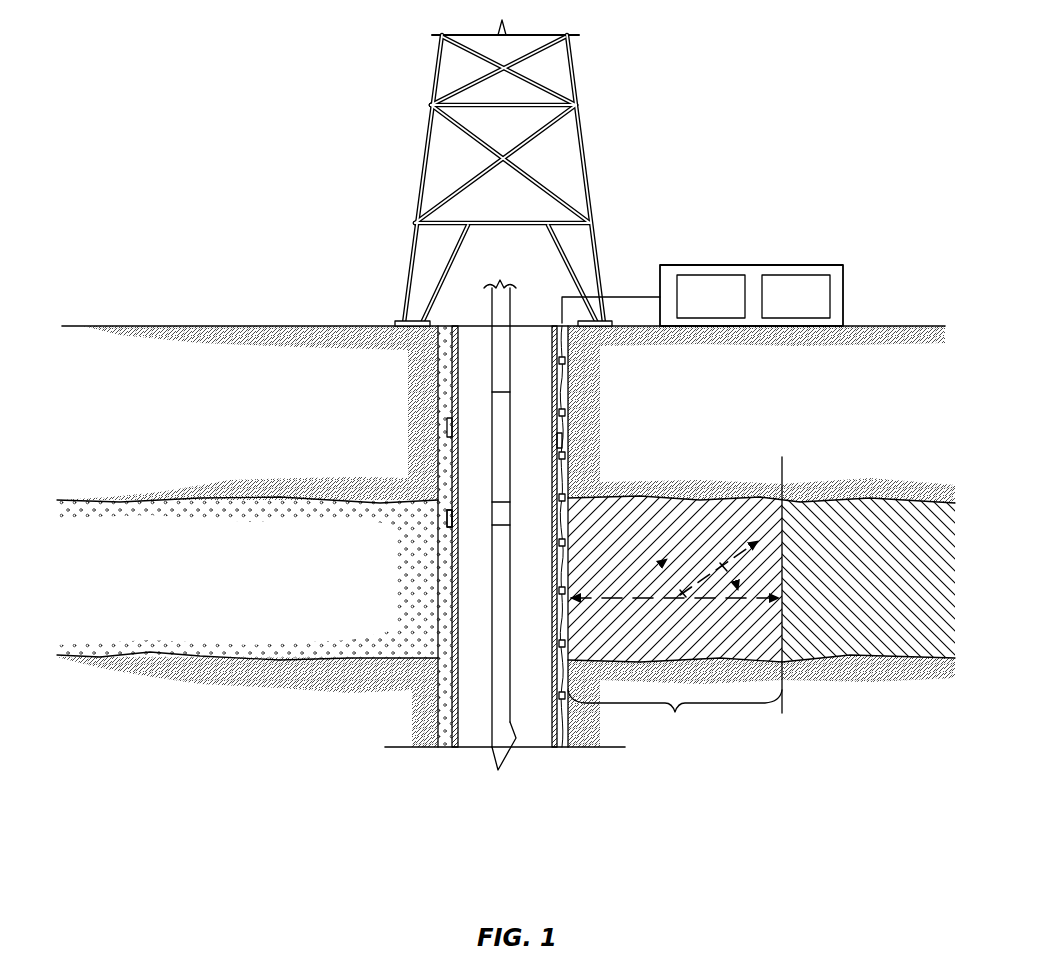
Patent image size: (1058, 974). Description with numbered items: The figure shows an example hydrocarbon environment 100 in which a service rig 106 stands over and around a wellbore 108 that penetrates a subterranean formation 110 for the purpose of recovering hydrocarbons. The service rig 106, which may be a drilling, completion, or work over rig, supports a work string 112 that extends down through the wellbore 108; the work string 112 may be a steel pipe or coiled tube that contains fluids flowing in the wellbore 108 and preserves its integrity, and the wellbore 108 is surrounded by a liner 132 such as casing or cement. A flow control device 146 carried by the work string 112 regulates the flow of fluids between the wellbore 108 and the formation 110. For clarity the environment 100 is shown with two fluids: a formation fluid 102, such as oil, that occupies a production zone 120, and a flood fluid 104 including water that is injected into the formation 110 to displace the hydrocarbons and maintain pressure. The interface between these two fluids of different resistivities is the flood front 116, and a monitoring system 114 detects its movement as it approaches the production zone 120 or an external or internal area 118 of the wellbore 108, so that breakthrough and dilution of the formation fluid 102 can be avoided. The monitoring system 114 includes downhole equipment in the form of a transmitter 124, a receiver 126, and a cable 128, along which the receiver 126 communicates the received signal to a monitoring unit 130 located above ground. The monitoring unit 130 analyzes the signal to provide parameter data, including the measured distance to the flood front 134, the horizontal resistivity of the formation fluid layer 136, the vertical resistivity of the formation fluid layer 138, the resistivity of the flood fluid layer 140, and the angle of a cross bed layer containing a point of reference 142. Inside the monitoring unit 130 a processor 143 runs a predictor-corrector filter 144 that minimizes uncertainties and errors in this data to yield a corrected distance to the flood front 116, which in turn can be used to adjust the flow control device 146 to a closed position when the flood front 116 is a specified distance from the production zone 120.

The hydrocarbon environment 100 is at (758, 48).
The formation fluid 102 is at (634, 641).
The flood fluid 104 is at (915, 636).
The service rig 106 is at (590, 148).
The wellbore 108 is at (444, 610).
The subterranean formation 110 is at (106, 419).
The work string 112 is at (492, 358).
The monitoring system 114 is at (718, 388).
The flood front 116 is at (783, 700).
The external or internal area of the wellbore 118 is at (576, 600).
The production zone 120 is at (675, 716).
The transmitter 124 is at (447, 428).
The receiver 126 is at (568, 413).
The cable 128 is at (568, 381).
The monitoring unit 130 is at (751, 280).
The liner 132 is at (440, 473).
The measured distance to the flood front (d) 134 is at (656, 602).
The horizontal resistivity of a formation fluid layer (Rch) 136 is at (744, 562).
The vertical resistivity of the formation fluid layer (Rcv) 138 is at (674, 580).
The resistivity of a flood fluid layer (Rw) 140 is at (881, 530).
The angle of a cross bed layer containing a point of reference 142 is at (727, 568).
The processor 143 is at (731, 310).
The predictor-corrector filter 144 is at (816, 310).
The flow control device 146 is at (447, 522).